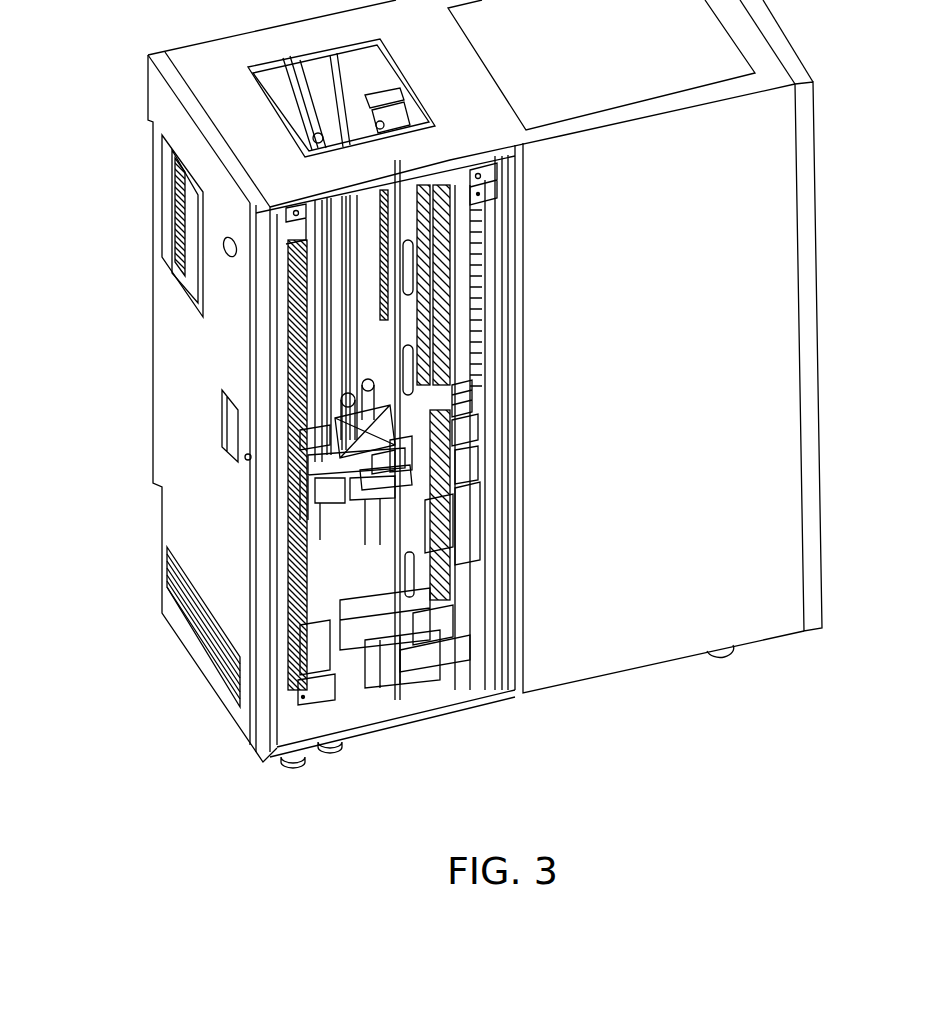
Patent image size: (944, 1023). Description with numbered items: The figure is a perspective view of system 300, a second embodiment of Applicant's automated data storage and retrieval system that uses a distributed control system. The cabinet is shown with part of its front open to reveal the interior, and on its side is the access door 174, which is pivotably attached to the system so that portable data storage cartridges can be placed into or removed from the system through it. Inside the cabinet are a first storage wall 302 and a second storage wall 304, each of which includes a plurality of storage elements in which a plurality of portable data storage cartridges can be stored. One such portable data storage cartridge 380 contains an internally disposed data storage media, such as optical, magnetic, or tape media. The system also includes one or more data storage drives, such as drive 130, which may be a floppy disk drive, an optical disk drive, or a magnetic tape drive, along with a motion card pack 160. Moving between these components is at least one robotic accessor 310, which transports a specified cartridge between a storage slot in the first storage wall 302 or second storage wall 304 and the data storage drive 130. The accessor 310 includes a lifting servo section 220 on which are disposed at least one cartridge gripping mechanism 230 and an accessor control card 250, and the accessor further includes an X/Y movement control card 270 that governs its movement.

The system 300 is at (679, 705).
The access door 174 is at (190, 233).
The second storage wall 304 is at (287, 346).
The first storage wall 302 is at (462, 313).
The portable data storage cartridge 380 is at (467, 404).
The data storage drive 130 is at (466, 471).
The motion card pack 160 is at (460, 500).
The accessor control card 250 is at (325, 432).
The lifting servo section 220 is at (325, 460).
The robotic accessor 310 is at (385, 483).
The cartridge gripping mechanism 230 is at (398, 490).
The X/Y movement control card 270 is at (347, 648).